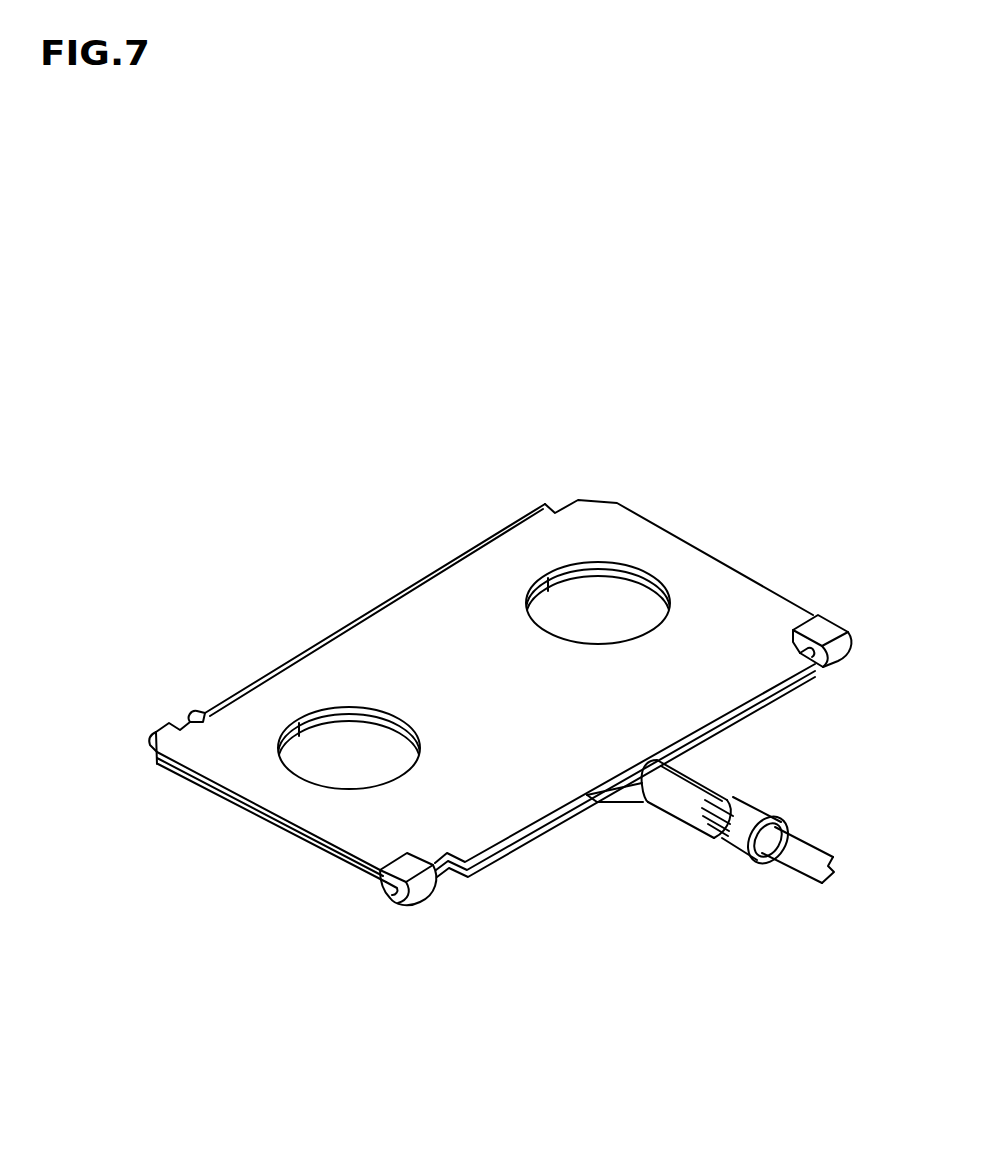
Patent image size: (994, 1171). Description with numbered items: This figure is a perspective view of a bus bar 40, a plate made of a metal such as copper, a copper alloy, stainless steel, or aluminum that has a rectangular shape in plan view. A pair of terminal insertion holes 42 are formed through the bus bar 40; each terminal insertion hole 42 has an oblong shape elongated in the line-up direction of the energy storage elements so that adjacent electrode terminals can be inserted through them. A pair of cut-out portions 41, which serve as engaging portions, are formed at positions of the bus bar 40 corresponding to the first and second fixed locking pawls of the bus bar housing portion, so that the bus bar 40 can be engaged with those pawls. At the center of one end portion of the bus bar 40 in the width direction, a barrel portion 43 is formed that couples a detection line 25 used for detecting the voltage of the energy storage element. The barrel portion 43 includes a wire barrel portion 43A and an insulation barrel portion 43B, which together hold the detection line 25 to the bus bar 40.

The bus bar 40 is at (404, 529).
The cut-out portion 41 is at (178, 716).
The terminal insertion hole 42 is at (645, 587).
The barrel portion 43 is at (747, 798).
The wire barrel portion 43A is at (700, 772).
The insulation barrel portion 43B is at (760, 805).
The detection line 25 is at (797, 848).